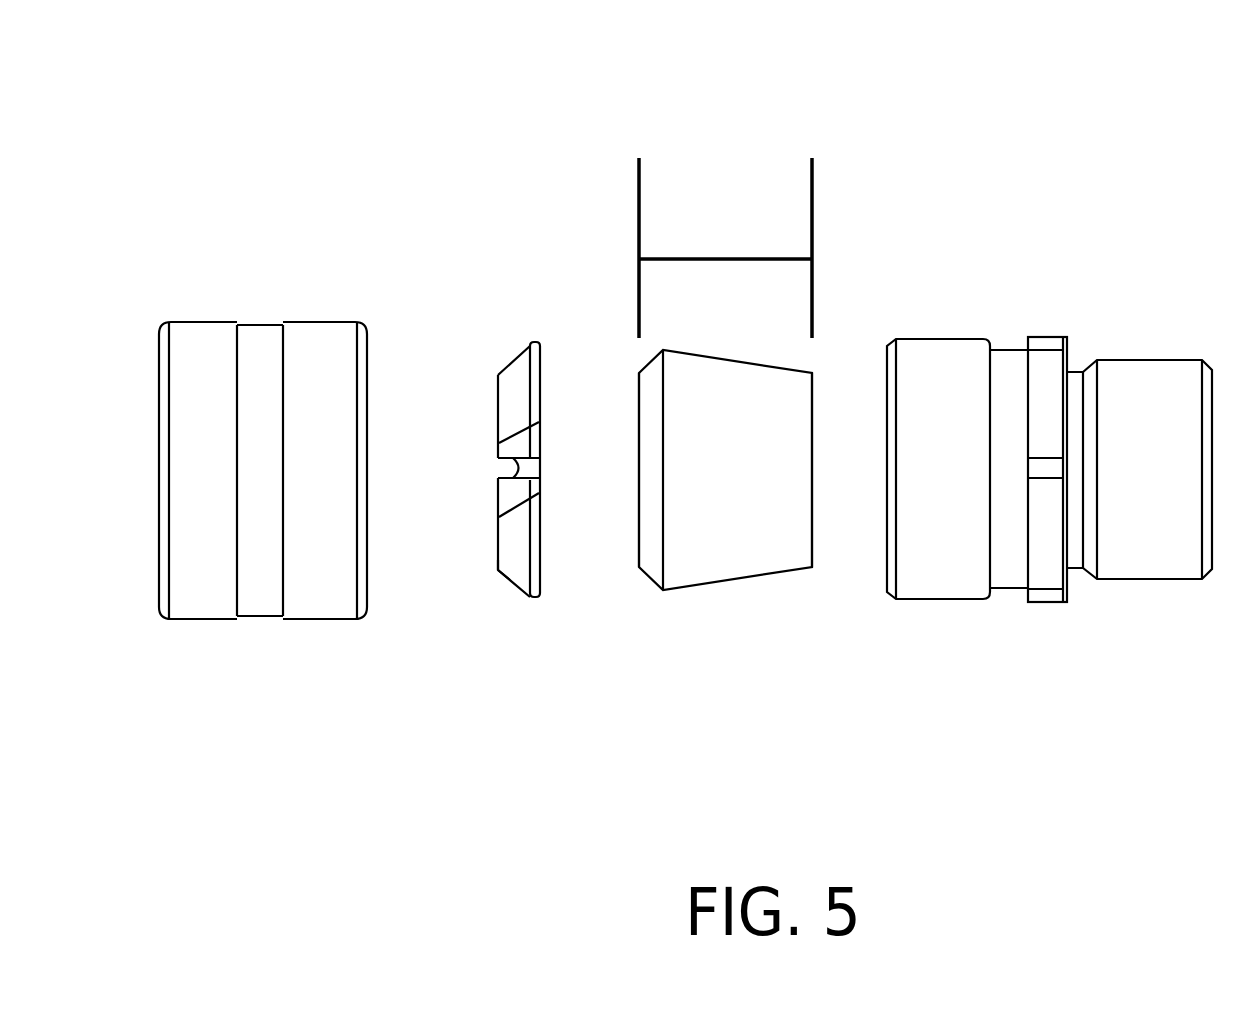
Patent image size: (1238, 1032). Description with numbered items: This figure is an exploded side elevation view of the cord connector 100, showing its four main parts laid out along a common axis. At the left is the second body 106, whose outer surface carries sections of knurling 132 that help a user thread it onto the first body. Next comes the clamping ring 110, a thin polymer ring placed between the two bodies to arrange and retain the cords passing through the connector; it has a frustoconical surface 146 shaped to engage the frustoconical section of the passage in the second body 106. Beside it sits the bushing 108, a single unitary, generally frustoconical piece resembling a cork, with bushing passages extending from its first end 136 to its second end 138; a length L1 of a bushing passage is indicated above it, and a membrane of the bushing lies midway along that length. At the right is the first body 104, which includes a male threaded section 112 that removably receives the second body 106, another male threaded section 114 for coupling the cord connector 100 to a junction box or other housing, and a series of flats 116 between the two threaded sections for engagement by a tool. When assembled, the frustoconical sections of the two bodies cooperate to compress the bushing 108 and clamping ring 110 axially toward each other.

The cord connector 100 is at (387, 130).
The first body 104 is at (1012, 380).
The second body 106 is at (252, 590).
The bushing 108 is at (712, 569).
The clamping ring 110 is at (531, 372).
The male threaded section 112 is at (930, 368).
The male threaded section 114 is at (1150, 388).
The series of flats 116 is at (1043, 562).
The knurling 132 is at (215, 357).
The first end 136 is at (637, 536).
The second end 138 is at (814, 548).
The frustoconical surface 146 is at (507, 582).
The length L1 is at (713, 256).